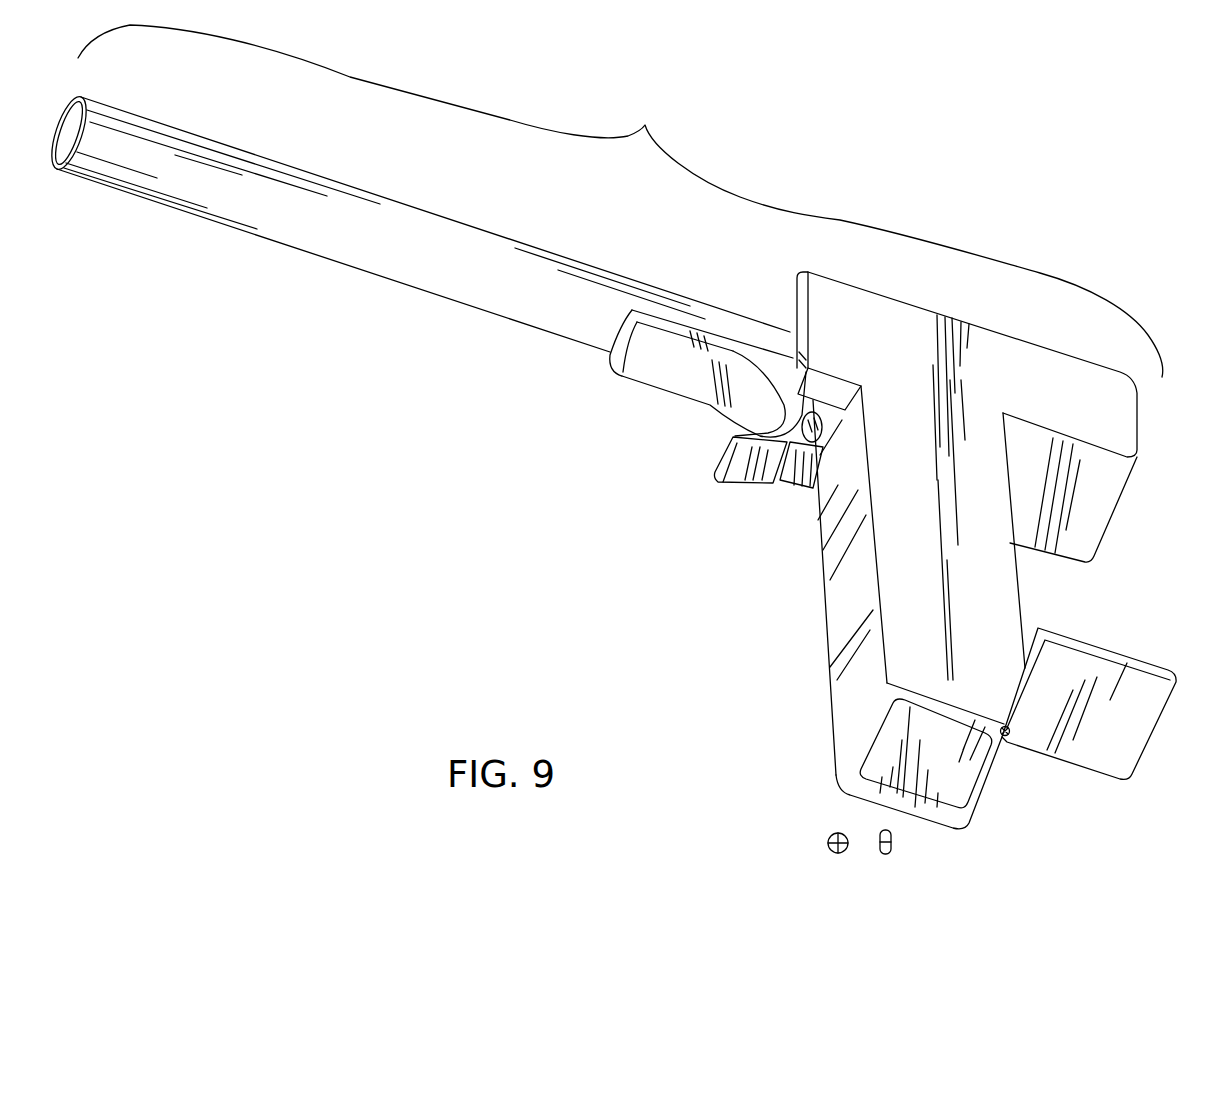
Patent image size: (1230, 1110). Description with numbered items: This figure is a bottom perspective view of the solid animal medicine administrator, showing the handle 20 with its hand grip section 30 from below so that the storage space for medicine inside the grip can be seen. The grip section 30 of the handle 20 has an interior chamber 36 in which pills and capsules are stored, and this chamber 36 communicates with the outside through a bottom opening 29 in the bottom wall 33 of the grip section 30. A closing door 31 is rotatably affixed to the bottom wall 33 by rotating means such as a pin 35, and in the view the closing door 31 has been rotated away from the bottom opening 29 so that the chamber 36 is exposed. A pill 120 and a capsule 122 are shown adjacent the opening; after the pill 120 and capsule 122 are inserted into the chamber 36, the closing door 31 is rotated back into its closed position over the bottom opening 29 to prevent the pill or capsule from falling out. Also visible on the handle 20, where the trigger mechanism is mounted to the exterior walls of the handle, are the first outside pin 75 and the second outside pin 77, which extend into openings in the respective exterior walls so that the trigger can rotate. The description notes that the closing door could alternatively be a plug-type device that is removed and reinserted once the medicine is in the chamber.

The handle 20 is at (1096, 624).
The bottom opening 29 is at (950, 800).
The hand grip section 30 is at (1005, 586).
The closing door 31 is at (1130, 750).
The bottom wall 33 is at (970, 820).
The pin 35 is at (1008, 736).
The interior chamber 36 is at (907, 773).
The first outside pin 75 is at (782, 325).
The second outside pin 77 is at (812, 445).
The pill 120 is at (827, 843).
The capsule 122 is at (885, 857).